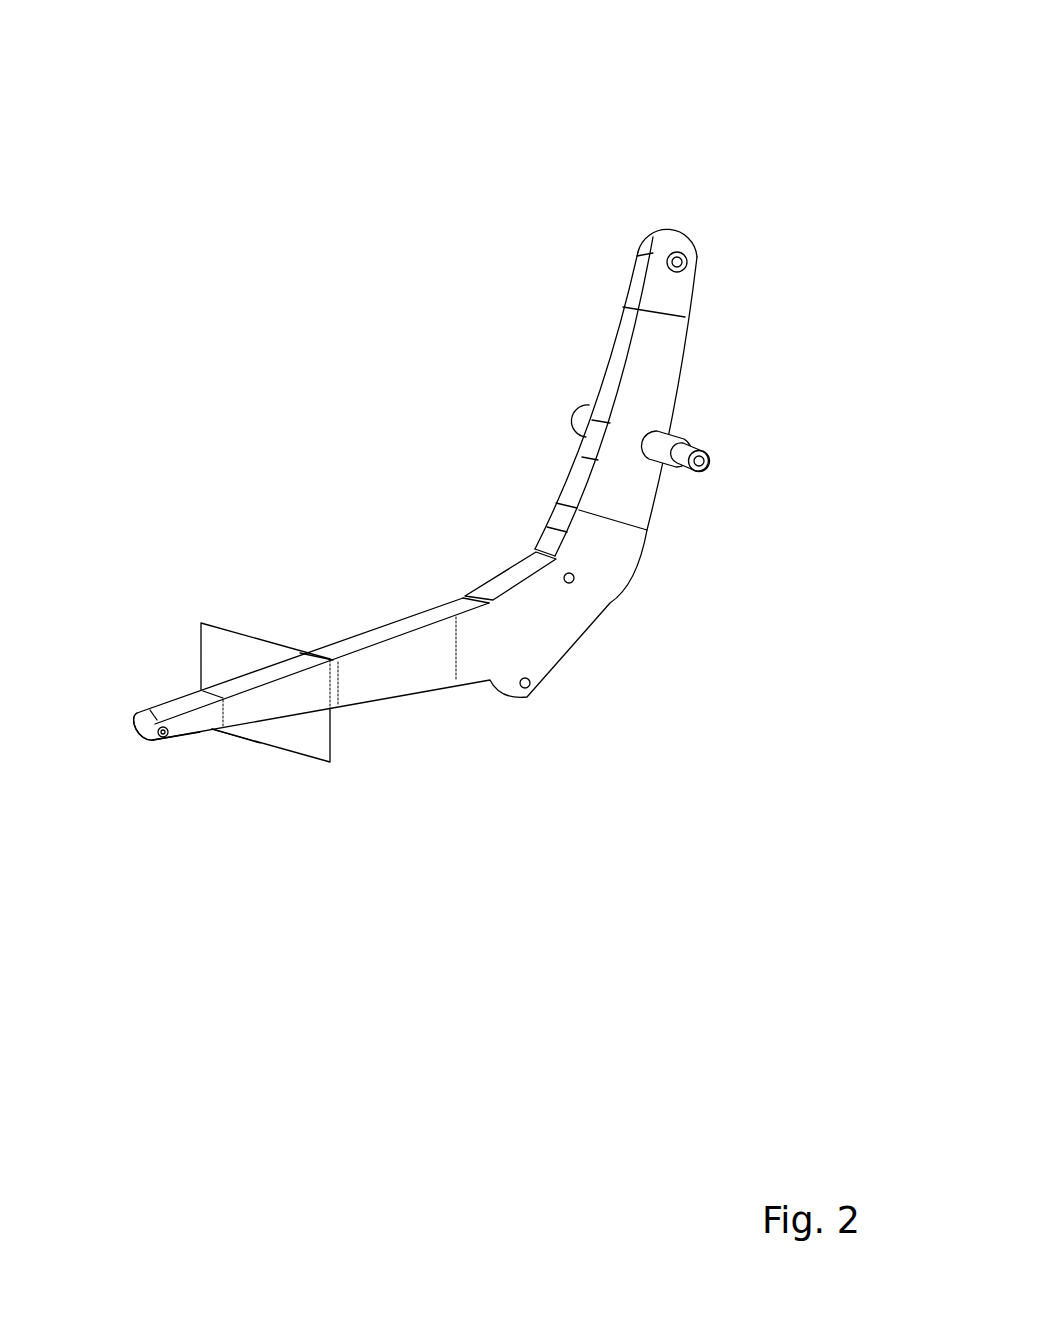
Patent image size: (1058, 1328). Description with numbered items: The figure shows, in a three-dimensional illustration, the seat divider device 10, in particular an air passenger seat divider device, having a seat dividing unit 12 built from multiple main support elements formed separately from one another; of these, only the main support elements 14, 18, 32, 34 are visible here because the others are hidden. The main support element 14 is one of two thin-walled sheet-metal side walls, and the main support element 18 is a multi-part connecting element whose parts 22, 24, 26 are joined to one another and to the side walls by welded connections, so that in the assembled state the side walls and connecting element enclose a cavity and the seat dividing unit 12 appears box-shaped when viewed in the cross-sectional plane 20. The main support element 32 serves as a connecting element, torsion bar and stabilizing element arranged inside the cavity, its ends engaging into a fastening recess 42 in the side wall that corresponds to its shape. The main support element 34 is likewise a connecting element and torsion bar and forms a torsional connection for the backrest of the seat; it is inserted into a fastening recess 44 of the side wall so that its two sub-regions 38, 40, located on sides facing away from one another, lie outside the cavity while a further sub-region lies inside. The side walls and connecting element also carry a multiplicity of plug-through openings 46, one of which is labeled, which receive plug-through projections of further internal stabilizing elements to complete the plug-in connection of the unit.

The seat divider device 10 is at (478, 373).
The seat dividing unit 12 is at (720, 122).
The main support element 14 is at (678, 330).
The main support element 18 is at (318, 651).
The cross-sectional plane 20 is at (215, 627).
The part 22 is at (652, 243).
The part 24 is at (392, 628).
The part 26 is at (145, 721).
The main support element 32 is at (155, 741).
The main support element 34 is at (685, 437).
The sub-region 38 is at (710, 450).
The sub-region 40 is at (580, 400).
The fastening recess 42 is at (167, 746).
The fastening recess 44 is at (661, 423).
The plug-through opening 46 is at (238, 728).